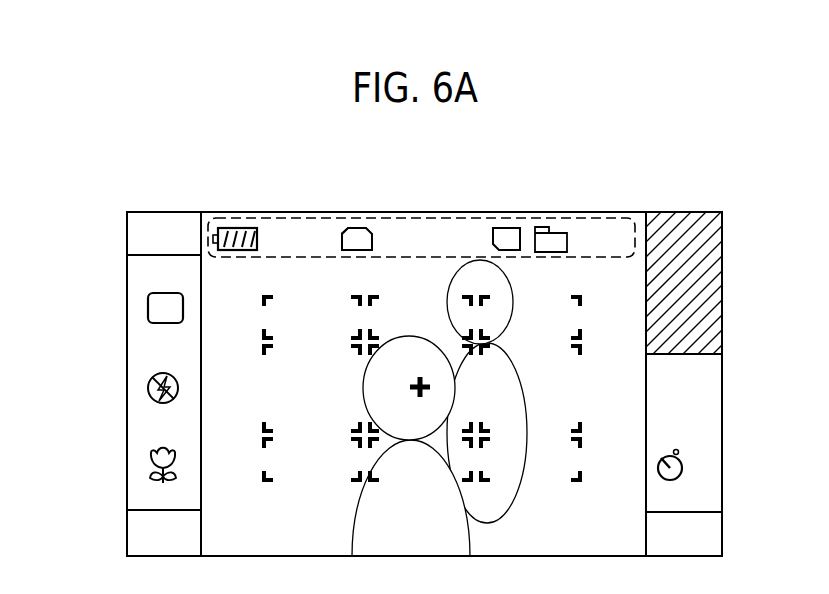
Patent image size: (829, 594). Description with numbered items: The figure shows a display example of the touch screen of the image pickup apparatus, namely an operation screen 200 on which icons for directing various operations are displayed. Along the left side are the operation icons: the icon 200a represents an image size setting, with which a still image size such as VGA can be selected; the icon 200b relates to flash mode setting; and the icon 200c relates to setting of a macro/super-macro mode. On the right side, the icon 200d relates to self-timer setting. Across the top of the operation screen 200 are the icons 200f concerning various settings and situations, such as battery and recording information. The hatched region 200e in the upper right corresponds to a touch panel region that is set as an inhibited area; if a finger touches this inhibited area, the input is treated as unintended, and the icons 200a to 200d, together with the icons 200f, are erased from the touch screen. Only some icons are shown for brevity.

The operation screen 200 is at (283, 212).
The icons concerning various settings and situations 200f is at (455, 218).
The image size setting icon 200a is at (148, 307).
The flash mode setting icon 200b is at (148, 388).
The macro/super-macro mode setting icon 200c is at (150, 468).
The self-timer setting icon 200d is at (700, 470).
The region set as inhibited area 200e is at (712, 293).